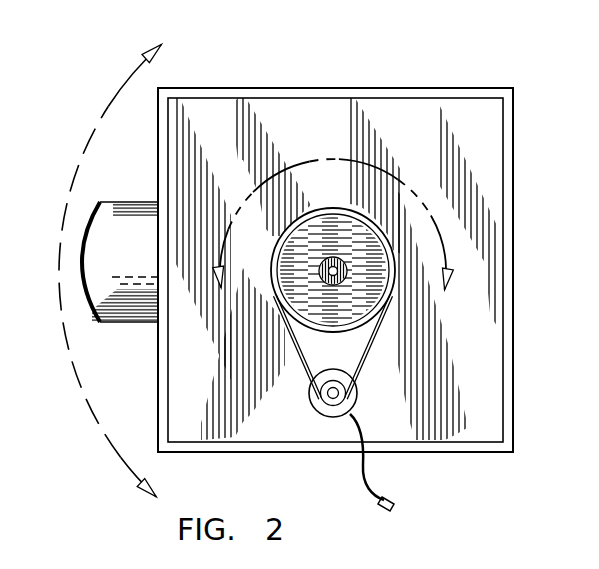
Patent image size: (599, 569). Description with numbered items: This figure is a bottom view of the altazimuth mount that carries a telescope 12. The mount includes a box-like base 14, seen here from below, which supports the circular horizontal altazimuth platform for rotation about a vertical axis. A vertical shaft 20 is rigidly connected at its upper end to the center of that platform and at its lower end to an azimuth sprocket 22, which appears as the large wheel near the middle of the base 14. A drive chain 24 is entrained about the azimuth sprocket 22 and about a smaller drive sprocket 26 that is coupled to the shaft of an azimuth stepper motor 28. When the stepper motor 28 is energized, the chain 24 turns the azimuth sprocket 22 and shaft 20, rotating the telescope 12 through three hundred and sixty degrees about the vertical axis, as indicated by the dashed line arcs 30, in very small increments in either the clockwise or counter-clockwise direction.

The telescope 12 is at (123, 204).
The box-like base 14 is at (405, 89).
The vertical shaft 20 is at (346, 265).
The azimuth sprocket 22 is at (370, 302).
The drive chain 24 is at (357, 370).
The drive sprocket 26 is at (348, 399).
The azimuth stepper motor 28 is at (320, 403).
The dashed line arcs 30 is at (117, 94).